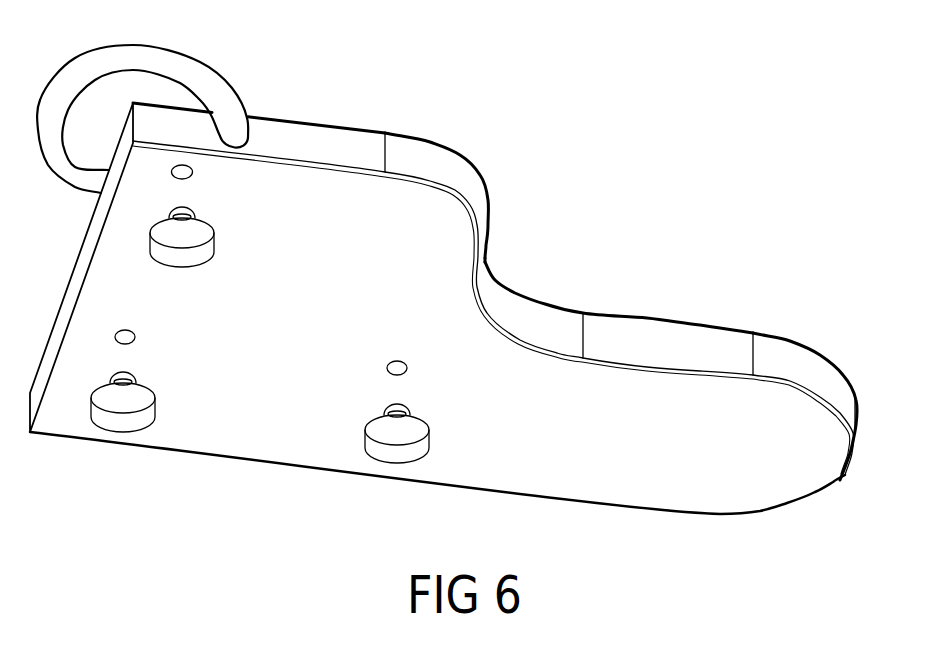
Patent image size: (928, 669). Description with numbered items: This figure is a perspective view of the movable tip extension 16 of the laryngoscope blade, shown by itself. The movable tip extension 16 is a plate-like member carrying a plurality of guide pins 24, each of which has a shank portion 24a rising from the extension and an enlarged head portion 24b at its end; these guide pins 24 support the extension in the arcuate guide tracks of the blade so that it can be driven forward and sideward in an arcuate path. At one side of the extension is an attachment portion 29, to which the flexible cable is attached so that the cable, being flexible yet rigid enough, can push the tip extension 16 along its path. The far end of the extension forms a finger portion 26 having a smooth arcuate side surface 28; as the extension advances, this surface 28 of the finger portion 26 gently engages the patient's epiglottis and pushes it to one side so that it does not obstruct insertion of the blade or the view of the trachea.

The movable tip extension 16 is at (469, 308).
The guide pins 24 is at (252, 377).
The shank portion 24a is at (170, 212).
The enlarged head portion 24b is at (157, 233).
The finger portion 26 is at (810, 460).
The smooth arcuate side surface 28 is at (530, 318).
The attachment portion 29 is at (192, 63).